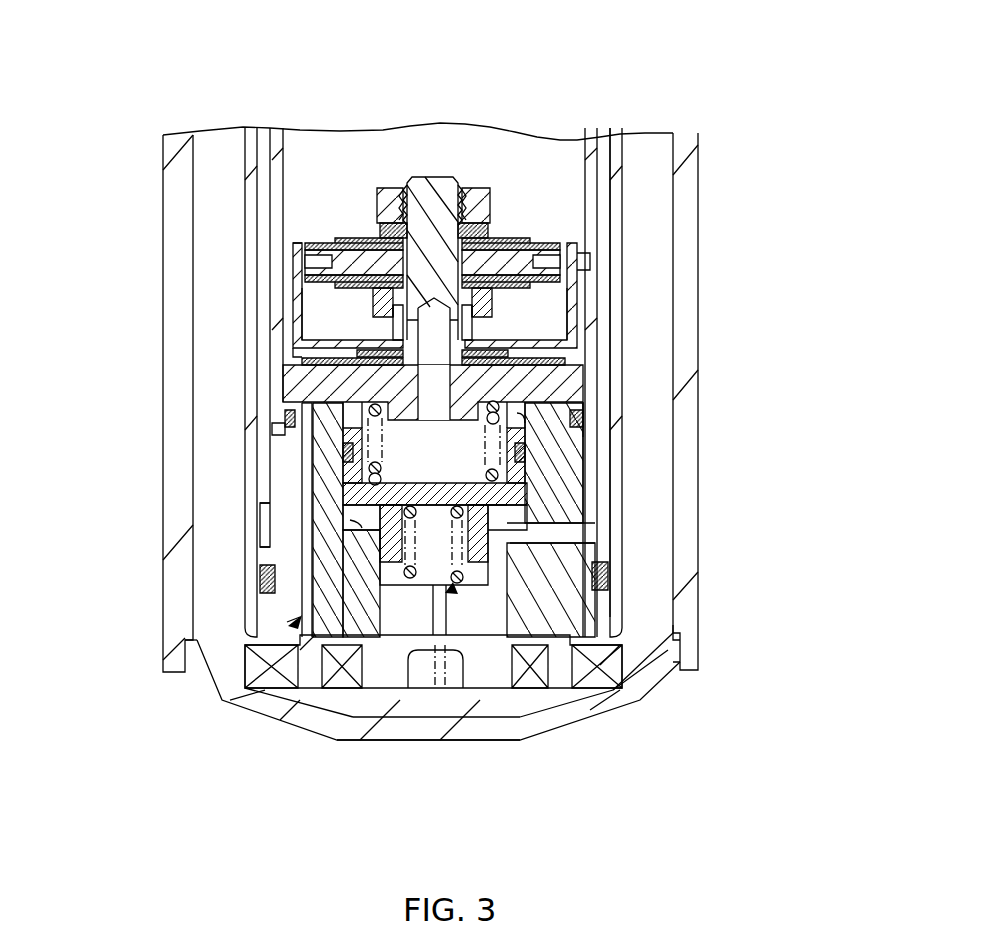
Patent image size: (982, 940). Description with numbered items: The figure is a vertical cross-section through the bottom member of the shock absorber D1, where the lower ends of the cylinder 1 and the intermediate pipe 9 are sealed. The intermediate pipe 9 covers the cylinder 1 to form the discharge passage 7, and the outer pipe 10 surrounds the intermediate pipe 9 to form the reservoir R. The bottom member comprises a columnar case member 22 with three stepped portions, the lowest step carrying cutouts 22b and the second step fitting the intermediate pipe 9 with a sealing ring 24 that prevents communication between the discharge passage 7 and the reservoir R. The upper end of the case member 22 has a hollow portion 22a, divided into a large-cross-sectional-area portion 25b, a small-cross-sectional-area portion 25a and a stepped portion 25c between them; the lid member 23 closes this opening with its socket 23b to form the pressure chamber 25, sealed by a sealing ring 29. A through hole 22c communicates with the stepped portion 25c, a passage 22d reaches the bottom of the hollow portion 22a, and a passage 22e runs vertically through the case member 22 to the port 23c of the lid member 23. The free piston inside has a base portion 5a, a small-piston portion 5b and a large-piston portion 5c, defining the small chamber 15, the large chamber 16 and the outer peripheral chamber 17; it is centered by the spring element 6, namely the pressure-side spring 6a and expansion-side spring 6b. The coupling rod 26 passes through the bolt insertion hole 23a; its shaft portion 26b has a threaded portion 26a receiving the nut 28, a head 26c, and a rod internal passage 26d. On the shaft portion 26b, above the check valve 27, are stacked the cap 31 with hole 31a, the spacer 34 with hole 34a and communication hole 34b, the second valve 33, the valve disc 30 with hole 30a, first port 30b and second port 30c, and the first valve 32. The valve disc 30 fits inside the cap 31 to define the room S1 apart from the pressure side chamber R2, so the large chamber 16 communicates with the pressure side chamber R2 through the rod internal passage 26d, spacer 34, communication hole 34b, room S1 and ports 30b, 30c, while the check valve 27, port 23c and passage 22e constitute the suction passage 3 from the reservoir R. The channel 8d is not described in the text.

The shock absorber D1 is at (148, 124).
The cylinder 1 is at (588, 163).
The suction passage 3 is at (180, 633).
The base portion 5a is at (442, 463).
The small-piston portion 5b is at (470, 600).
The large-piston portion 5c is at (598, 492).
The spring element 6 is at (450, 640).
The pressure-side spring 6a is at (498, 512).
The expansion-side spring 6b is at (430, 600).
The discharge passage 7 is at (603, 160).
The channel 8d is at (570, 533).
The intermediate pipe 9 is at (620, 168).
The outer pipe 10 is at (715, 170).
The small chamber 15 is at (352, 718).
The large chamber 16 is at (245, 483).
The outer peripheral chamber 17 is at (258, 503).
The case member 22 is at (530, 480).
The hollow portion 22a is at (527, 445).
The cutouts 22b is at (273, 682).
The through hole 22c is at (608, 578).
The passage 22d is at (437, 640).
The passage 22e is at (250, 560).
The lid member 23 is at (598, 383).
The bolt insertion hole 23a is at (590, 413).
The socket 23b is at (600, 440).
The port 23c is at (280, 383).
The sealing ring 24 is at (682, 638).
The pressure chamber 25 is at (258, 452).
The small-cross-sectional-area portion 25a is at (257, 607).
The large-cross-sectional-area portion 25b is at (285, 415).
The stepped portion 25c is at (260, 543).
The coupling rod 26 is at (417, 166).
The threaded portion 26a is at (497, 165).
The shaft portion 26b is at (436, 180).
The head 26c is at (372, 437).
The rod internal passage 26d is at (580, 350).
The check valve 27 is at (293, 357).
The nut 28 is at (395, 186).
The sealing ring 29 is at (273, 430).
The valve disc 30 is at (578, 267).
The hole 30a is at (464, 238).
The first port 30b is at (290, 249).
The second port 30c is at (583, 256).
The cap 31 is at (580, 312).
The hole 31a is at (537, 328).
The first valve 32 is at (298, 240).
The second valve 33 is at (318, 256).
The spacer 34 is at (600, 302).
The hole 34a is at (349, 238).
The communication hole 34b is at (382, 323).
The reservoir R is at (653, 160).
The pressure side chamber R2 is at (524, 190).
The room S1 is at (312, 294).